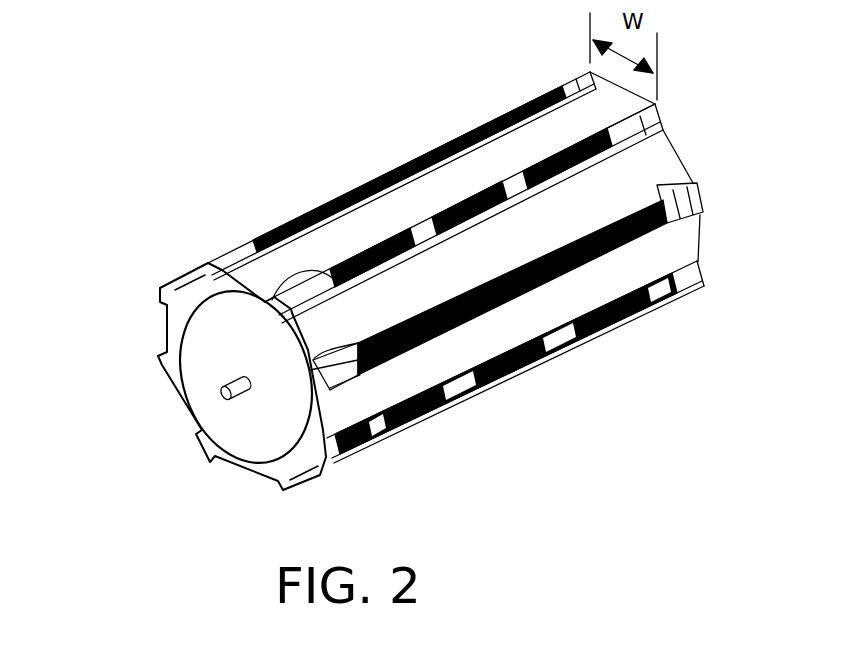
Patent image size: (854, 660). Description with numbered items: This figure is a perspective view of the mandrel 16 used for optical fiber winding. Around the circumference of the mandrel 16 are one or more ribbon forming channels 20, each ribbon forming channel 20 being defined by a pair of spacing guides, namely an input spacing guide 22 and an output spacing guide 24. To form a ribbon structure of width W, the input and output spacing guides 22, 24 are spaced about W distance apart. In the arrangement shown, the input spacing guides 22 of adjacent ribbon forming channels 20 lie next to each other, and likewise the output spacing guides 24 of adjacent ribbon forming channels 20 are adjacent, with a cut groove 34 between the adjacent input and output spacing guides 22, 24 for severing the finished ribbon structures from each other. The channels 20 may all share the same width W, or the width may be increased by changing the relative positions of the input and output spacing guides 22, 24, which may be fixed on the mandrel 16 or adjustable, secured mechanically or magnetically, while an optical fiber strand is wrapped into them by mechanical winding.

The mandrel 16 is at (200, 275).
The ribbon forming channel 20 is at (478, 167).
The input spacing guide 22 is at (300, 272).
The output spacing guide 24 is at (290, 225).
The cut groove 34 is at (653, 107).